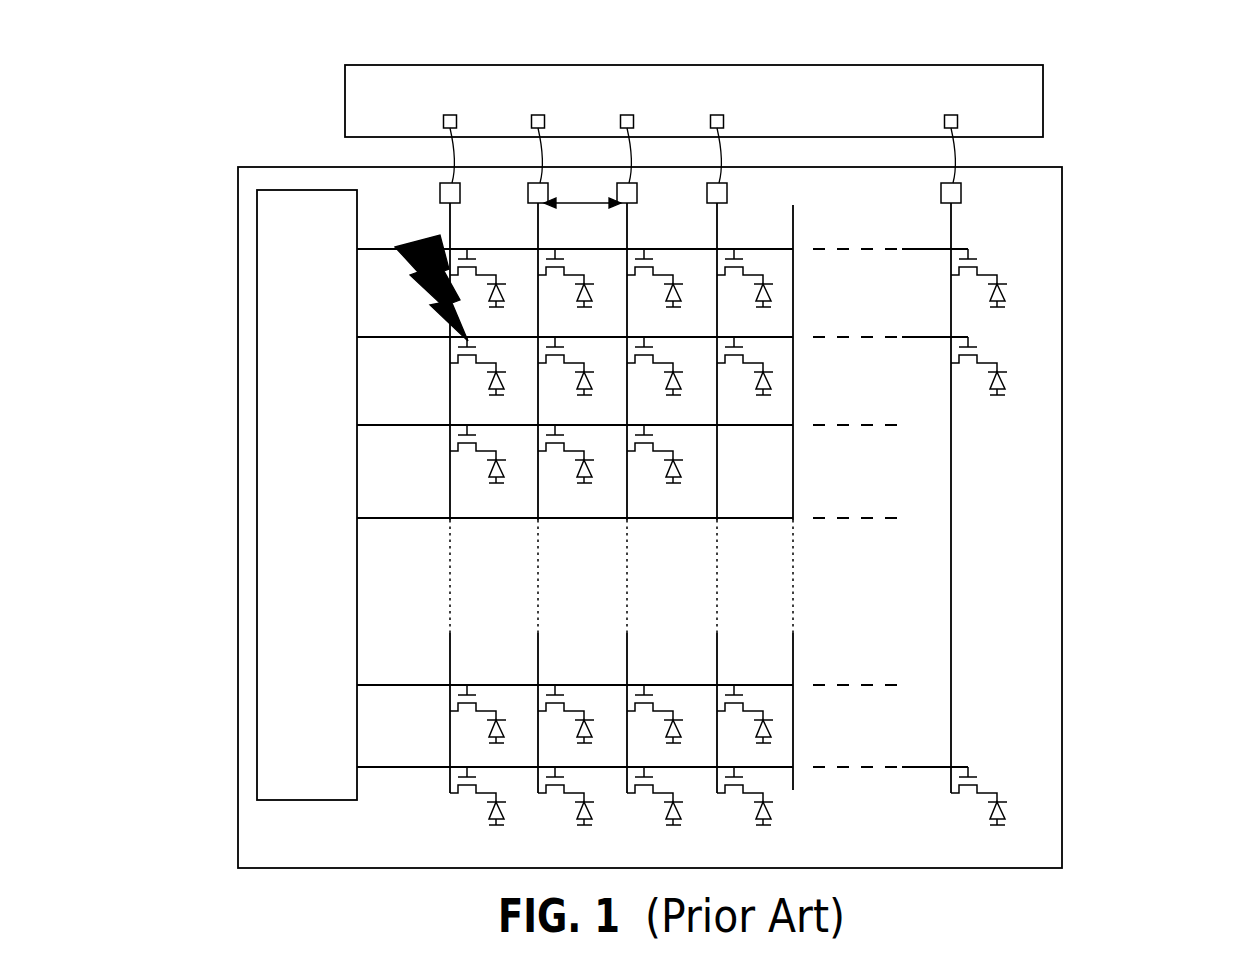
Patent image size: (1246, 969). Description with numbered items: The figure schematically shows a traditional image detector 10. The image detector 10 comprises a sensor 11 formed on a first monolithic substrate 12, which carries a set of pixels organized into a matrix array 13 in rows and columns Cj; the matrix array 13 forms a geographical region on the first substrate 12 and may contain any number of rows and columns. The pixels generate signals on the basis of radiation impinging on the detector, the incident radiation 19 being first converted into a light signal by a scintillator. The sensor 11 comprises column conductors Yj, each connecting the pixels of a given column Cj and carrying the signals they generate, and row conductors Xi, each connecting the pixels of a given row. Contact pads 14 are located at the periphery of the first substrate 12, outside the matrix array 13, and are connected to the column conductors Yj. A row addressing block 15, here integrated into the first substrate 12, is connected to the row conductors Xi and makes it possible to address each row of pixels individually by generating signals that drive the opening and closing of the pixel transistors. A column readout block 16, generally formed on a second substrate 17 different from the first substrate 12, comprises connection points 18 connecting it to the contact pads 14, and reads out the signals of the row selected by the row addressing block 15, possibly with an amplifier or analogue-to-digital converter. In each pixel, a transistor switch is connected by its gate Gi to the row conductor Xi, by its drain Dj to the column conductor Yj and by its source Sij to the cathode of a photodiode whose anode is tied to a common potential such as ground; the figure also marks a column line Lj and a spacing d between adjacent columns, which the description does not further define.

The image detector 10 is at (256, 99).
The sensor 11 is at (1077, 744).
The first monolithic substrate 12 is at (1052, 180).
The matrix array 13 is at (758, 586).
The contact pads 14 is at (961, 203).
The row addressing block 15 is at (257, 205).
The column readout block 16 is at (1043, 82).
The second substrate 17 is at (1027, 110).
The connection points 18 is at (952, 115).
The incident radiation 19 is at (410, 262).
The column Cj is at (667, 190).
The row conductor Xi is at (395, 418).
The column conductor Yj is at (627, 497).
The column line j Lj is at (377, 500).
The gate Gi is at (644, 418).
The drain Dj is at (619, 451).
The source Sij is at (676, 445).
The column pitch d is at (582, 192).